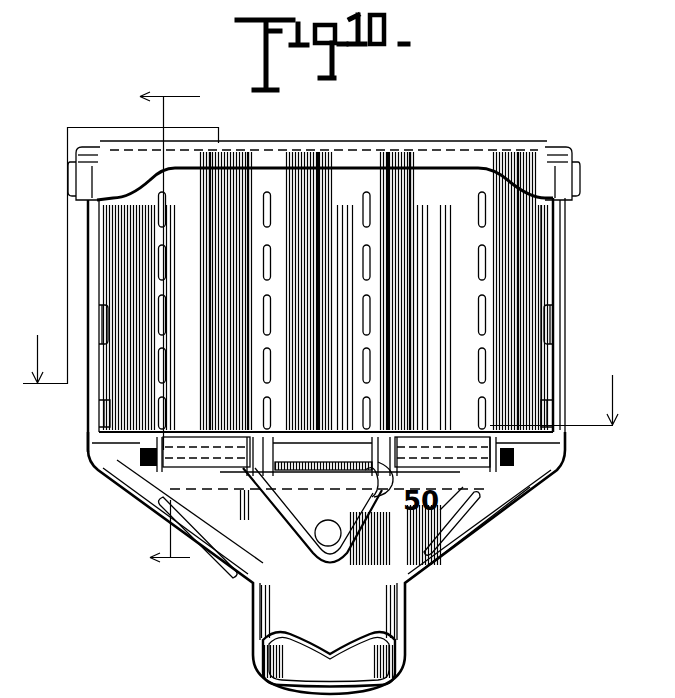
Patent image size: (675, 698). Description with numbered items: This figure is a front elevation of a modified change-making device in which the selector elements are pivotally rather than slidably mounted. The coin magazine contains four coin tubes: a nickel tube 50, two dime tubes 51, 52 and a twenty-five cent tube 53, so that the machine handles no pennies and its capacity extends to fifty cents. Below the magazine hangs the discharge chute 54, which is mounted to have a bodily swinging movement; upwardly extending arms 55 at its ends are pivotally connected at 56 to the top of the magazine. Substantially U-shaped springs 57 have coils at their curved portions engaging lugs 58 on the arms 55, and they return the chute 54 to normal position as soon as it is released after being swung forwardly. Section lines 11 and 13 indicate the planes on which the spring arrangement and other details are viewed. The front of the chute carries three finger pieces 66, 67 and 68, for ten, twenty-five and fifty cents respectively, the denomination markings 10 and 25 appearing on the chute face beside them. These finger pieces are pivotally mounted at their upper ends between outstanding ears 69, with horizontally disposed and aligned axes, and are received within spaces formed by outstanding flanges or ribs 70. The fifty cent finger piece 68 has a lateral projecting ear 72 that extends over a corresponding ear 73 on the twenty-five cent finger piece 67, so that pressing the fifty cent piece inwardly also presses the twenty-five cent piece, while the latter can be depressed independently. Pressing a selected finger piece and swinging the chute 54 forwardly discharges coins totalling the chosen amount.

The cast marking 10 is at (231, 501).
The section line 11- 11 is at (324, 278).
The section line 13- 13 is at (170, 332).
The cast marking 25 is at (328, 501).
The nickel tube 50 is at (174, 310).
The dime tube 51 is at (281, 310).
The dime tube 52 is at (380, 310).
The twenty-five cent tube 53 is at (498, 310).
The discharge chute 54 is at (440, 553).
The upwardly extending arms 55 is at (88, 276).
The pivotal connection 56 is at (70, 165).
The springs 57 is at (100, 394).
The lugs 58 is at (93, 322).
The ten cent finger piece 66 is at (263, 563).
The twenty-five cent finger piece 67 is at (333, 537).
The fifty cent finger piece 68 is at (390, 567).
The outstanding ears 69 is at (260, 443).
The outstanding flanges or ribs 70 is at (477, 508).
The lateral projecting ear 72 is at (373, 507).
The ear 73 is at (353, 479).